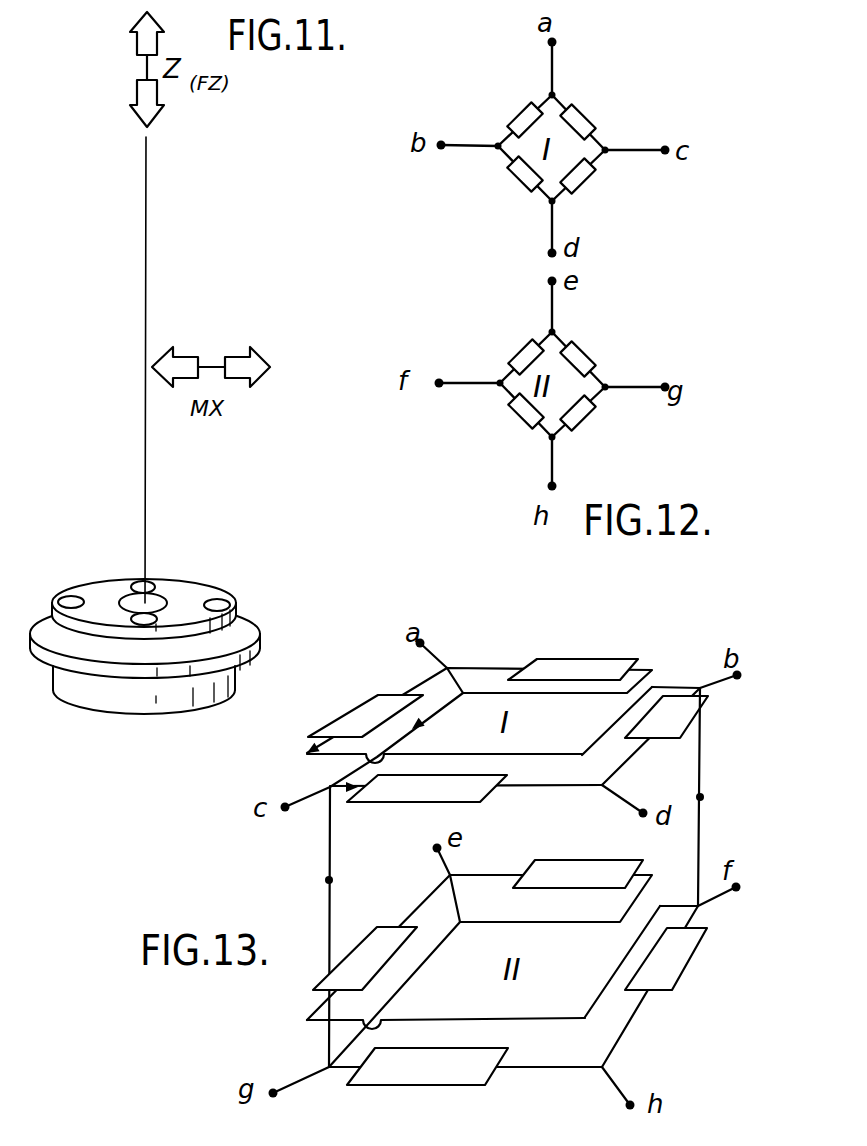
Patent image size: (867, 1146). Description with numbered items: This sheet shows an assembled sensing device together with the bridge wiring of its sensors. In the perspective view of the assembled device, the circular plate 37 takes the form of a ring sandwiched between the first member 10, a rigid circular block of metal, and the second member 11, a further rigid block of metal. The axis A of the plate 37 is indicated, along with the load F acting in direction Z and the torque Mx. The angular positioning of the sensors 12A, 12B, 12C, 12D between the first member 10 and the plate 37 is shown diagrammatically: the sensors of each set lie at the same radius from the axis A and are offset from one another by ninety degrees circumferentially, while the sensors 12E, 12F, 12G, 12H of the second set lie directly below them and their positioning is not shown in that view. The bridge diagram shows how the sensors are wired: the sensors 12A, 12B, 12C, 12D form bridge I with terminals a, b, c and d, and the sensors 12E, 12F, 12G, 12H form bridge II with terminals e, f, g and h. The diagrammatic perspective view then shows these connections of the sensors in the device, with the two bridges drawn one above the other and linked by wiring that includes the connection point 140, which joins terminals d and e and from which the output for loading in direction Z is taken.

In FIG. 11, the first member 10 is at (46, 605).
In FIG. 11, the second member 11 is at (100, 708).
In FIG. 11, the circular plate 37 is at (258, 648).
In FIG. 11, the sensor 12A is at (72, 596).
In FIG. 12, the sensor 12A is at (515, 113).
In FIG. 13, the sensor 12A is at (357, 717).
In FIG. 11, the sensor 12B is at (147, 581).
In FIG. 12, the sensor 12B is at (579, 121).
In FIG. 13, the sensor 12B is at (613, 638).
In FIG. 11, the sensor 12C is at (219, 599).
In FIG. 12, the sensor 12C is at (518, 172).
In FIG. 13, the sensor 12C is at (670, 717).
In FIG. 11, the sensor 12D is at (143, 625).
In FIG. 12, the sensor 12D is at (583, 176).
In FIG. 13, the sensor 12D is at (415, 782).
In FIG. 12, the sensor 12E is at (518, 358).
In FIG. 13, the sensor 12E is at (372, 947).
In FIG. 12, the sensor 12F is at (582, 357).
In FIG. 13, the sensor 12F is at (585, 840).
In FIG. 12, the sensor 12G is at (522, 415).
In FIG. 13, the sensor 12G is at (667, 970).
In FIG. 12, the sensor 12H is at (578, 413).
In FIG. 13, the sensor 12H is at (458, 1075).
In FIG. 13, the connection point 140 is at (700, 797).
In FIG. 11, the axis A is at (172, 370).